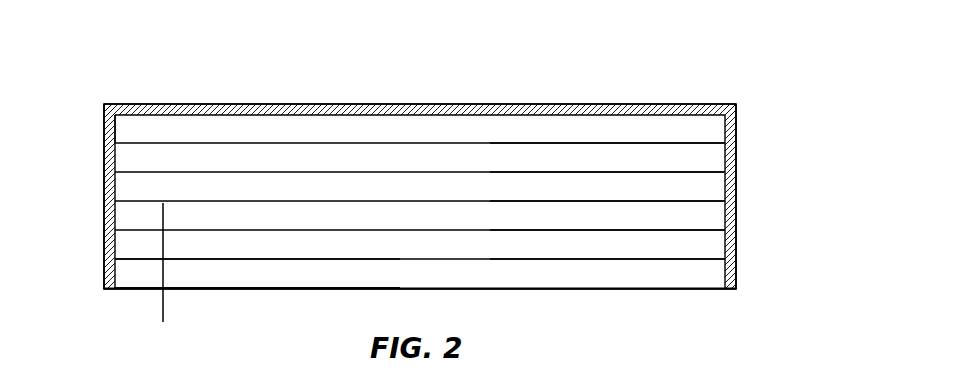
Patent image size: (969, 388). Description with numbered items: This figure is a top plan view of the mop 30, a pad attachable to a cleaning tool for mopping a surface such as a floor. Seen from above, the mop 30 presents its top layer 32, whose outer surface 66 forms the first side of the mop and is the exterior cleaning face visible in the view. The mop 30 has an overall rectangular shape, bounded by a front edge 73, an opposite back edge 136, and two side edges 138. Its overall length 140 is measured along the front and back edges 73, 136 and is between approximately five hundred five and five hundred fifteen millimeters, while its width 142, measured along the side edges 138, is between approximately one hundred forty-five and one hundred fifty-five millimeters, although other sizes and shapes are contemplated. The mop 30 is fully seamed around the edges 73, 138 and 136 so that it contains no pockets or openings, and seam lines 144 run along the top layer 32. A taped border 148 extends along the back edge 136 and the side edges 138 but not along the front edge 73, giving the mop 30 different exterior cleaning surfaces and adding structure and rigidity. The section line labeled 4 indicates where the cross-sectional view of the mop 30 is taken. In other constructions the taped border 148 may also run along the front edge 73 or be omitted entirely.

The mop 30 is at (786, 66).
The top layer 32 is at (266, 273).
The back edge 136 is at (523, 108).
The side edges 138 is at (103, 190).
The overall length 140 is at (736, 97).
The width 142 is at (745, 105).
The seam lines 144 is at (496, 143).
The taped border 148 is at (115, 133).
The section line 4- 4 is at (168, 310).
The outer surface 66 is at (310, 268).
The front edge 73 is at (249, 289).